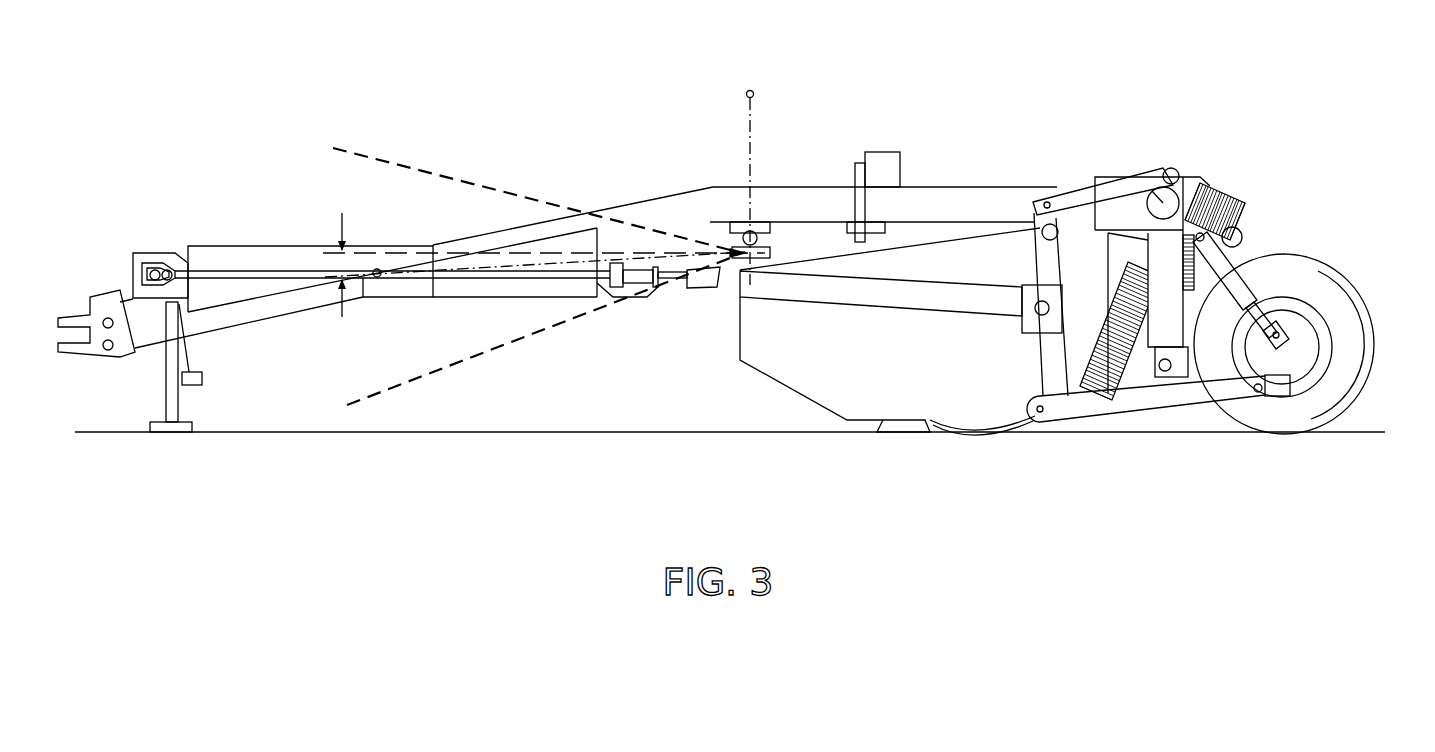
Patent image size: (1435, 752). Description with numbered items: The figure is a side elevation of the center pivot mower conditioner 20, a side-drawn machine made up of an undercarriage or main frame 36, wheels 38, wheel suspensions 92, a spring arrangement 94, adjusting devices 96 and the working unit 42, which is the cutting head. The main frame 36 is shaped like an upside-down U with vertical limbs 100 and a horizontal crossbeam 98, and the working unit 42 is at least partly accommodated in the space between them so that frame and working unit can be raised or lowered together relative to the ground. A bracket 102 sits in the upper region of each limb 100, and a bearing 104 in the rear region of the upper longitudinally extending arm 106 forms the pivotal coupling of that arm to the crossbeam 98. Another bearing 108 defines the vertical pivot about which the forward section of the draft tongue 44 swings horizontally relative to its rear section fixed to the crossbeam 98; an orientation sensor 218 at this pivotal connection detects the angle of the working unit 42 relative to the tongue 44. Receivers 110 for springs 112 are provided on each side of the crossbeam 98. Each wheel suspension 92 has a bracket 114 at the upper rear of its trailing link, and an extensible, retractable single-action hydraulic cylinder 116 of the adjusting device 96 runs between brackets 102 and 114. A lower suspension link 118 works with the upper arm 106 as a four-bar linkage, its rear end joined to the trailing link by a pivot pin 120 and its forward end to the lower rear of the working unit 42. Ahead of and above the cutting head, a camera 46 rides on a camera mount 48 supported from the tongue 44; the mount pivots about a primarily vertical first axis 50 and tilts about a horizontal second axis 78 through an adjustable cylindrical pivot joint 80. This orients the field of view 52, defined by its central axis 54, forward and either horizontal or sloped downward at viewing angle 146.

The mower conditioner 20 is at (478, 88).
The first axis 50 is at (750, 91).
The bearing 108 is at (857, 162).
The orientation sensor 218 is at (888, 152).
The draft tongue 44 is at (660, 195).
The camera mount 48 is at (743, 233).
The second axis 78 is at (770, 245).
The cylindrical pivot joint 80 is at (757, 240).
The camera 46 is at (737, 266).
The working unit 42 is at (727, 360).
The field of view 52 is at (322, 172).
The central axis 54 is at (377, 277).
The viewing angle 146 is at (332, 315).
The upper longitudinally extending arm 106 is at (1058, 195).
The horizontal crossbeam 98 is at (1152, 190).
The bearing 104 is at (1171, 170).
The bracket 102 is at (1206, 182).
The receiver 110 is at (1238, 198).
The spring arrangement 94 is at (1250, 215).
The cylinder 116 is at (1264, 274).
The adjusting device 96 is at (1268, 283).
The bracket 114 is at (1352, 270).
The wheel 38 is at (1345, 400).
The pivot pin 120 is at (1258, 395).
The wheel suspension 92 is at (1166, 428).
The main frame 36 is at (1160, 328).
The vertical limb 100 is at (1128, 352).
The spring 112 is at (1098, 395).
The lower suspension link 118 is at (1045, 420).